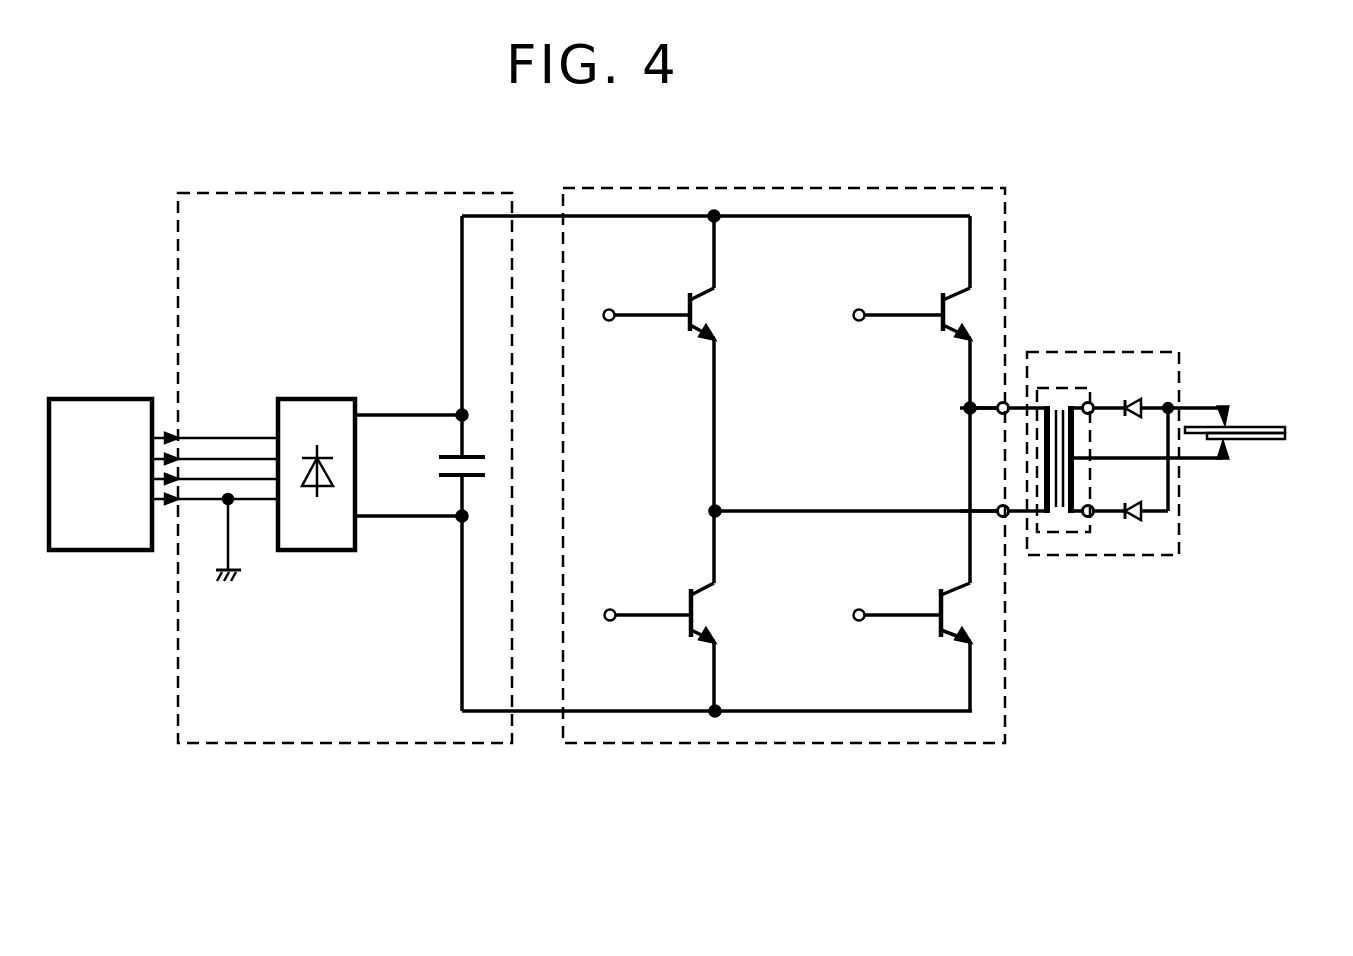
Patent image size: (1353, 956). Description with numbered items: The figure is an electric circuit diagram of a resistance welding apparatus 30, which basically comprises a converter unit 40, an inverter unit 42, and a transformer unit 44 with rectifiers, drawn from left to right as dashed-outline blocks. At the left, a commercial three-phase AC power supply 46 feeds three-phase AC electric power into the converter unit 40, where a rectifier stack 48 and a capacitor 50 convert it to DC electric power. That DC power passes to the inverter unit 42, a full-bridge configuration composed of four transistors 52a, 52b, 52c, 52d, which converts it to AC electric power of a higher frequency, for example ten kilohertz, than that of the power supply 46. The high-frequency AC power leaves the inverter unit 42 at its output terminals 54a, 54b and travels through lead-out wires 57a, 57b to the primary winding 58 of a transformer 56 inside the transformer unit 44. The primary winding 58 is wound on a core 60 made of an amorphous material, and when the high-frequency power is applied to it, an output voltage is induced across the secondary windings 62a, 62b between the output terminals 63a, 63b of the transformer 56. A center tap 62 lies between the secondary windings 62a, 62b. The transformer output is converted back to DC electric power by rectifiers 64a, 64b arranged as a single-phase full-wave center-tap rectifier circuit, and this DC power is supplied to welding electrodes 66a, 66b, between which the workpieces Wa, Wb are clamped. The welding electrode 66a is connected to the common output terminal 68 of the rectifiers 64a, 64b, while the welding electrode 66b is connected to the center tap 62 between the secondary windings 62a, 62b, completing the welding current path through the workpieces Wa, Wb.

The resistance welding apparatus 30 is at (697, 140).
The converter unit 40 is at (345, 192).
The inverter unit 42 is at (768, 188).
The transformer unit 44 is at (1080, 352).
The three-phase AC power supply 46 is at (90, 399).
The rectifier stack 48 is at (318, 399).
The capacitor 50 is at (440, 457).
The transistor 52a is at (693, 368).
The transistor 52b is at (935, 362).
The transistor 52c is at (696, 578).
The transistor 52d is at (937, 578).
The output terminal 54a is at (998, 412).
The output terminal 54b is at (998, 508).
The transformer 56 is at (1057, 388).
The lead-out wire 57a is at (1005, 401).
The lead-out wire 57b is at (1005, 518).
The primary winding 58 is at (1043, 514).
The core 60 is at (1070, 516).
The center tap 62 is at (1075, 457).
The secondary winding 62a is at (1075, 435).
The secondary winding 62b is at (1075, 490).
The output terminal 63a is at (1090, 402).
The output terminal 63b is at (1092, 518).
The rectifier 64a is at (1142, 402).
The rectifier 64b is at (1133, 518).
The welding electrode 66a is at (1228, 415).
The welding electrode 66b is at (1224, 462).
The common output terminal 68 is at (1172, 404).
The workpiece Wa is at (1250, 428).
The workpiece Wb is at (1245, 440).